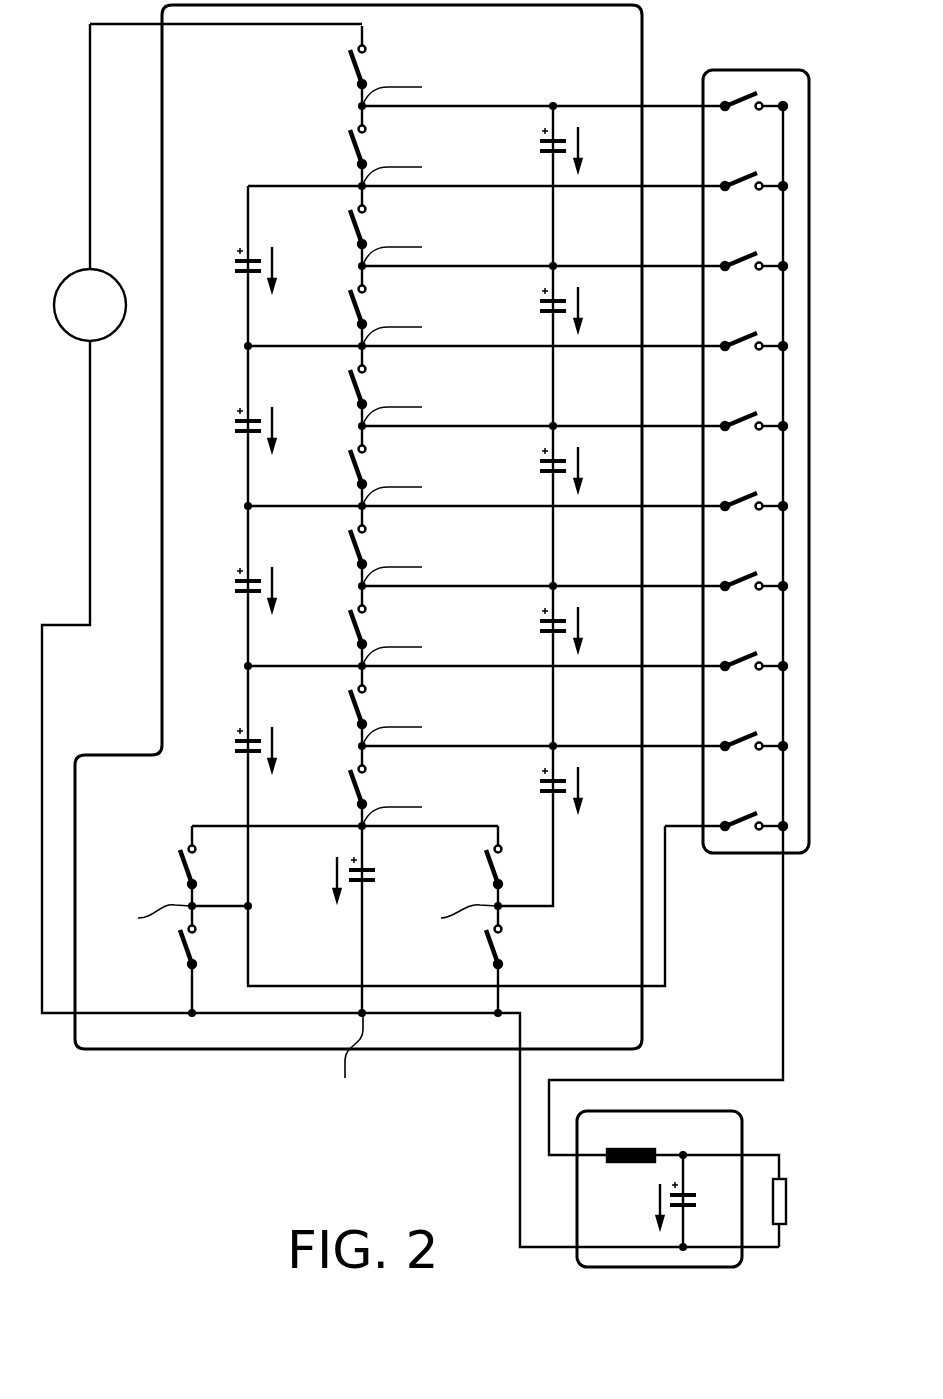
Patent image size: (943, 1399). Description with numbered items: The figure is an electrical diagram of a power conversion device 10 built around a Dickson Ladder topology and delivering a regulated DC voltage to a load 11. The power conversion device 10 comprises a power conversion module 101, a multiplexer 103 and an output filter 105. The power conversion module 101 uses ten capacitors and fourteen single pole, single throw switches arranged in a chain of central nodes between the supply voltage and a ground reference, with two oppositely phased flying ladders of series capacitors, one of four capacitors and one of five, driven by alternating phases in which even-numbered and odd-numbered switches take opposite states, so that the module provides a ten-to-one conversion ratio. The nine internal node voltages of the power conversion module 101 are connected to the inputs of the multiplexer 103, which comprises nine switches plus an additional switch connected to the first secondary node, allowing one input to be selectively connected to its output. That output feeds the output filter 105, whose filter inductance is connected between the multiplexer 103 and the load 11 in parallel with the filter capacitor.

The power conversion device 10 is at (112, 1138).
The load 11 is at (787, 1183).
The power conversion module 101 is at (643, 32).
The multiplexer 103 is at (767, 70).
The output filter 105 is at (695, 1111).